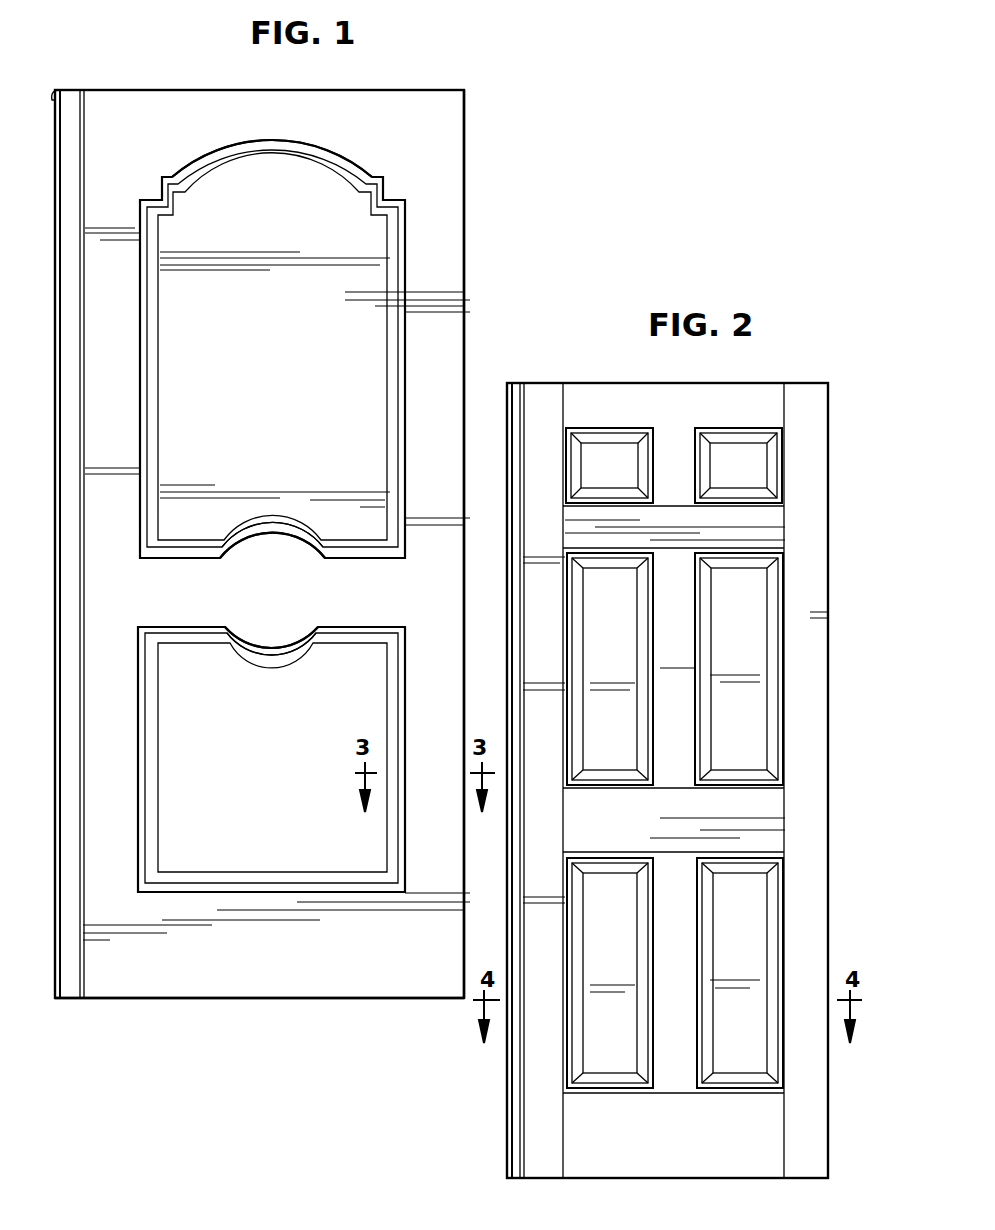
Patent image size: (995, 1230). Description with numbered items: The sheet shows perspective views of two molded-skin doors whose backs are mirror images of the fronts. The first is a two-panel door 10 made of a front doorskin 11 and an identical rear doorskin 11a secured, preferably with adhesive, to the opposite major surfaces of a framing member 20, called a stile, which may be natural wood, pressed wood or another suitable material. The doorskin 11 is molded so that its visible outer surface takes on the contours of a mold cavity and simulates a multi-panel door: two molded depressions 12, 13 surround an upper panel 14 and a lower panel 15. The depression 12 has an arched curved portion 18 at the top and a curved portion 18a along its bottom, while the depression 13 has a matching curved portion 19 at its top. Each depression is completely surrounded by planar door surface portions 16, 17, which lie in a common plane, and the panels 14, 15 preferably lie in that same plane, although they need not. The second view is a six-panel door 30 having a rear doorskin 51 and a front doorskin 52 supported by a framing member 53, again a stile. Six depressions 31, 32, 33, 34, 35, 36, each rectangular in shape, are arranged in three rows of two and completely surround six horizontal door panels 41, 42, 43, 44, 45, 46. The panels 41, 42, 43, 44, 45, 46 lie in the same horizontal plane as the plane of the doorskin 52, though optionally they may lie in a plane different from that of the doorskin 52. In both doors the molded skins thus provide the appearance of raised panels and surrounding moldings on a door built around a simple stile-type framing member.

In FIG. 1, the door 10 is at (48, 966).
In FIG. 1, the front doorskin 11 is at (202, 107).
In FIG. 1, the rear doorskin 11a is at (53, 86).
In FIG. 1, the molded depression 12 is at (398, 323).
In FIG. 1, the molded depression 13 is at (147, 855).
In FIG. 1, the panel 14 is at (288, 339).
In FIG. 1, the panel 15 is at (281, 759).
In FIG. 1, the planar door surface portion 16 is at (453, 197).
In FIG. 1, the planar door surface portion 17 is at (293, 964).
In FIG. 1, the curved portion 18 is at (258, 153).
In FIG. 1, the curved portion 18a is at (277, 523).
In FIG. 1, the curved portion 19 is at (292, 653).
In FIG. 1, the framing member 20 is at (72, 138).
In FIG. 2, the six-panel door 30 is at (822, 375).
In FIG. 2, the rectangular depression 31 is at (598, 437).
In FIG. 2, the rectangular depression 32 is at (733, 433).
In FIG. 2, the rectangular depression 33 is at (612, 548).
In FIG. 2, the rectangular depression 34 is at (747, 556).
In FIG. 2, the rectangular depression 35 is at (632, 862).
In FIG. 2, the rectangular depression 36 is at (735, 862).
In FIG. 2, the horizontal door panel 41 is at (621, 479).
In FIG. 2, the horizontal door panel 42 is at (750, 479).
In FIG. 2, the horizontal door panel 43 is at (621, 644).
In FIG. 2, the horizontal door panel 44 is at (750, 629).
In FIG. 2, the horizontal door panel 45 is at (621, 949).
In FIG. 2, the horizontal door panel 46 is at (750, 944).
In FIG. 2, the rear doorskin 51 is at (507, 410).
In FIG. 2, the front doorskin 52 is at (542, 400).
In FIG. 2, the framing member 53 is at (513, 437).